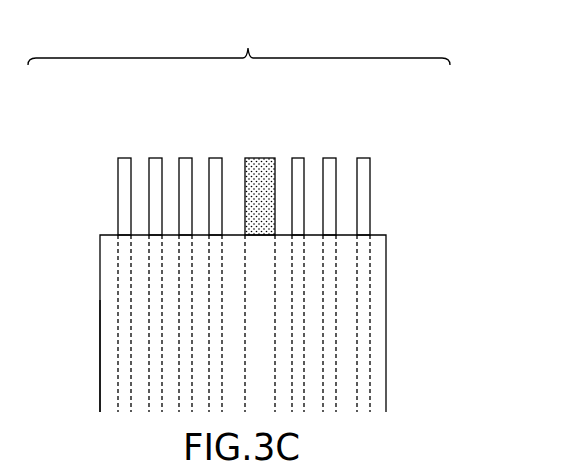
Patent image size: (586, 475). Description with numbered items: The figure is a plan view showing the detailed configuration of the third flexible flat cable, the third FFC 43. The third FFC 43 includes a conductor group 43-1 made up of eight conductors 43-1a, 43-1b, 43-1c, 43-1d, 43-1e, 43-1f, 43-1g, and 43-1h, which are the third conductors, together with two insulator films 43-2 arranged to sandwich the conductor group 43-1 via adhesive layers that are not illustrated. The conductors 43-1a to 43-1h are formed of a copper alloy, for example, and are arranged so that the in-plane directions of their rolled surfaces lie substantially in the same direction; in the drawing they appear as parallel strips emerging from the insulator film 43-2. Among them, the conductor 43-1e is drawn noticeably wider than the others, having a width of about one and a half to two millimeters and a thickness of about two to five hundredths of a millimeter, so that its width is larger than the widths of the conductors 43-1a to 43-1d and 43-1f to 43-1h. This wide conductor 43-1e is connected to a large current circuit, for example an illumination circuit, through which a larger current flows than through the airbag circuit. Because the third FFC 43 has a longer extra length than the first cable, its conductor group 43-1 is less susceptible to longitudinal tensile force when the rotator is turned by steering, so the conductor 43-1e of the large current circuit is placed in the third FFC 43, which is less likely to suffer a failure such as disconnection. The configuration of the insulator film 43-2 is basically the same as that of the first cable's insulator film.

The third FFC 43 is at (401, 281).
The conductor group 43-1 is at (239, 43).
The conductor 43-1a is at (124, 157).
The conductor 43-1b is at (155, 157).
The conductor 43-1c is at (186, 157).
The conductor 43-1d is at (216, 157).
The conductor 43-1e is at (253, 157).
The conductor 43-1f is at (297, 157).
The conductor 43-1g is at (328, 157).
The conductor 43-1h is at (363, 157).
The insulator film 43-2 is at (378, 349).